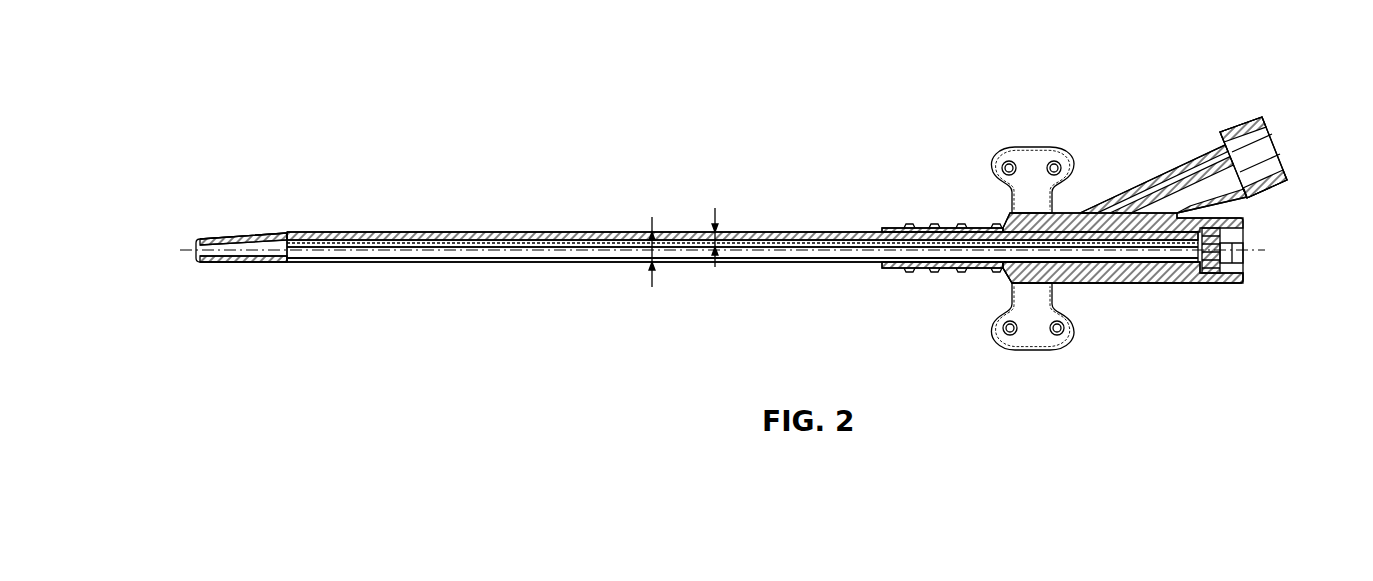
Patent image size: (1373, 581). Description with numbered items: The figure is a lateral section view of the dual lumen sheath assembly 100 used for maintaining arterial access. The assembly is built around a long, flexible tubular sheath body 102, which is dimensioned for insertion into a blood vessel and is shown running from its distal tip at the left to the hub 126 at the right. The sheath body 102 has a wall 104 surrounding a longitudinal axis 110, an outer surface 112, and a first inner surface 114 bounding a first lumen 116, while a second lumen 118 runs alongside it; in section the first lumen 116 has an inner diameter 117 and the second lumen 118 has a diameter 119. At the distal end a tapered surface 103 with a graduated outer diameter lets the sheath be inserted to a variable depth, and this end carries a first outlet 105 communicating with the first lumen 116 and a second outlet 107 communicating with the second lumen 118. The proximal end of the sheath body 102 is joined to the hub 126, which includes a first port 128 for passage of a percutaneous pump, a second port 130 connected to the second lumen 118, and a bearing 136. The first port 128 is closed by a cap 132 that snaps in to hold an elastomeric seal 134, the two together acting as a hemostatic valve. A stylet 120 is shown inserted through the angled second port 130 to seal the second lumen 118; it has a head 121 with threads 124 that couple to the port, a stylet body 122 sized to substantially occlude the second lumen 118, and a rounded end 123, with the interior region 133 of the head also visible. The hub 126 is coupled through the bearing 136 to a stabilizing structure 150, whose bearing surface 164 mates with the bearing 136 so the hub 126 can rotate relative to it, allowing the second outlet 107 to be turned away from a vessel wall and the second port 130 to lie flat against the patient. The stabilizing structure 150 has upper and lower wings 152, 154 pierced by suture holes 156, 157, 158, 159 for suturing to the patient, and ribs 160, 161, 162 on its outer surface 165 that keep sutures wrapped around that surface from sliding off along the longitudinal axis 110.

The dual lumen sheath assembly 100 is at (233, 99).
The tubular sheath body 102 is at (548, 232).
The tapered surface 103 is at (278, 262).
The wall 104 is at (1228, 90).
The first outlet 105 is at (226, 256).
The second outlet 107 is at (258, 232).
The longitudinal axis 110 is at (538, 258).
The outer surface 112 is at (403, 262).
The first inner surface 114 is at (447, 262).
The first lumen 116 is at (498, 256).
The inner diameter 117 is at (656, 245).
The second lumen 118 is at (500, 237).
The diameter 119 is at (718, 233).
The stylet 120 is at (1266, 128).
The head 121 is at (1288, 176).
The stylet body 122 is at (1085, 218).
The rounded end 123 is at (308, 236).
The threads 124 is at (1248, 122).
The hub 126 is at (1103, 270).
The first port 128 is at (1178, 272).
The second port 130 is at (1215, 165).
The cap 132 is at (1248, 228).
The cap interior 133 is at (1276, 150).
The seal 134 is at (1222, 266).
The bearing 136 is at (1038, 213).
The stabilizing structure 150 is at (987, 278).
The wing 152 is at (1033, 157).
The wing 154 is at (1033, 340).
The suture hole 156 is at (1004, 162).
The suture hole 157 is at (1058, 165).
The suture hole 158 is at (1008, 330).
The suture hole 159 is at (1058, 330).
The rib 160 is at (910, 227).
The rib 161 is at (935, 227).
The rib 162 is at (962, 227).
The bearing surface 164 is at (997, 227).
The outer surface 165 is at (918, 270).